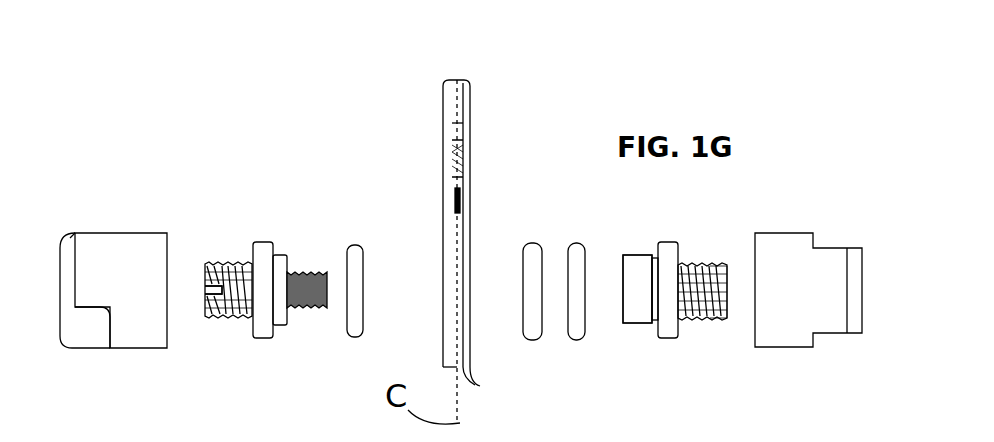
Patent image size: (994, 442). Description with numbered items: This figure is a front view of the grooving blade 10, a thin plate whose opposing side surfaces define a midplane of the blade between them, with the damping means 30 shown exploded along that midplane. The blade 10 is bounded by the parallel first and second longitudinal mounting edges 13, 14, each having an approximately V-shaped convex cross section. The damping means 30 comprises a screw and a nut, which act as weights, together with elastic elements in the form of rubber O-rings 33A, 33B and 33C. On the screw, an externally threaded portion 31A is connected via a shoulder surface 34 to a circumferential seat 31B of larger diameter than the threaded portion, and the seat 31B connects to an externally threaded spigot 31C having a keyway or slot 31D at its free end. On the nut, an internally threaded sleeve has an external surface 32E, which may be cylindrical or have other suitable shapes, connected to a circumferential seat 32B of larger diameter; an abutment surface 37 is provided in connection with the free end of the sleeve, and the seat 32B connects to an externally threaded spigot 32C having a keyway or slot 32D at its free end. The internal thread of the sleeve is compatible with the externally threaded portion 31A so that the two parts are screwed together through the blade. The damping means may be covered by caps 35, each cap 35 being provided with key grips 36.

The grooving blade 10 is at (505, 138).
The first longitudinal mounting edge 13 is at (457, 80).
The second longitudinal mounting edge 14 is at (465, 382).
The damping means 30 is at (881, 435).
The externally threaded portion 31A is at (303, 258).
The circumferential seat 31B is at (278, 260).
The externally threaded spigot 31C is at (223, 260).
The keyway or slot 31D is at (213, 290).
The circumferential seat 32B is at (655, 325).
The externally threaded spigot 32C is at (697, 322).
The keyway or slot 32D is at (715, 265).
The external surface 32E is at (633, 325).
The rubber O-ring 33A is at (355, 245).
The rubber O-ring 33B is at (530, 243).
The rubber O-ring 33C is at (577, 243).
The shoulder surface 34 is at (290, 318).
The cap 35 is at (98, 218).
The key grips 36 is at (329, 428).
The abutment surface 37 is at (623, 272).